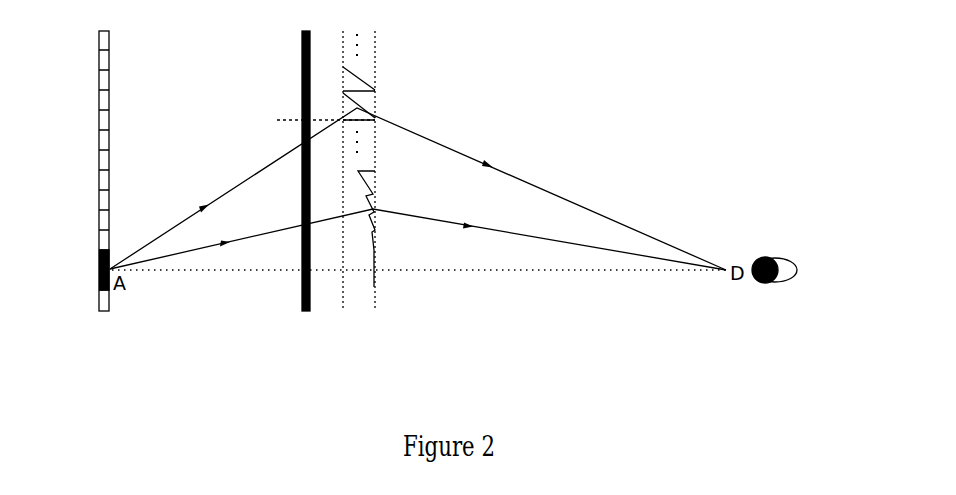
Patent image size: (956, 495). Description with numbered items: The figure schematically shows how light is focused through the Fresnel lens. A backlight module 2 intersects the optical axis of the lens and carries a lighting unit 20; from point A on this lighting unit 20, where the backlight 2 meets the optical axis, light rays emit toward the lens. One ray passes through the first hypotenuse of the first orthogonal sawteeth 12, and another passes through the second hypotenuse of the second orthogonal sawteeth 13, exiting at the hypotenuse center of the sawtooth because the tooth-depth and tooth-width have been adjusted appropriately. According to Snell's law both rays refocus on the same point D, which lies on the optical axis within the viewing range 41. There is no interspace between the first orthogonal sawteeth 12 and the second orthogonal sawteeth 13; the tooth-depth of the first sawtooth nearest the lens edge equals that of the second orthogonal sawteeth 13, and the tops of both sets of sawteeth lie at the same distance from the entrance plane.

The backlight module 2 is at (99, 190).
The lighting unit 20 is at (99, 272).
The second orthogonal sawteeth 13 is at (375, 92).
The first orthogonal sawteeth 12 is at (374, 232).
The viewing range 41 is at (797, 270).